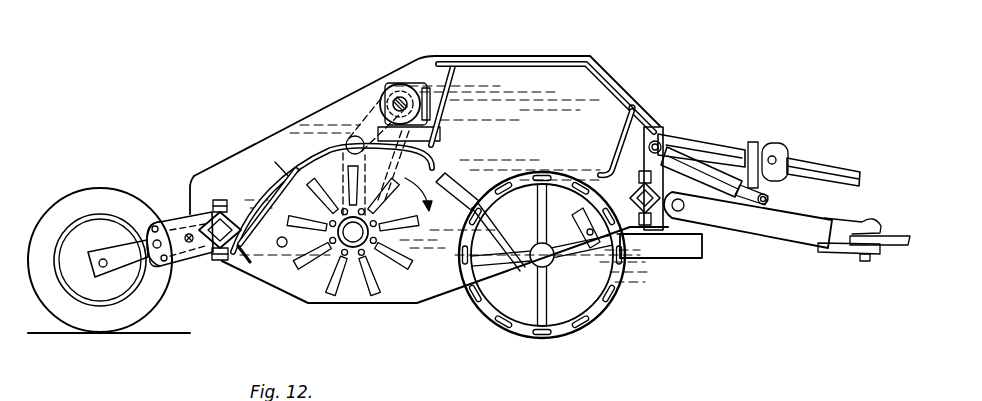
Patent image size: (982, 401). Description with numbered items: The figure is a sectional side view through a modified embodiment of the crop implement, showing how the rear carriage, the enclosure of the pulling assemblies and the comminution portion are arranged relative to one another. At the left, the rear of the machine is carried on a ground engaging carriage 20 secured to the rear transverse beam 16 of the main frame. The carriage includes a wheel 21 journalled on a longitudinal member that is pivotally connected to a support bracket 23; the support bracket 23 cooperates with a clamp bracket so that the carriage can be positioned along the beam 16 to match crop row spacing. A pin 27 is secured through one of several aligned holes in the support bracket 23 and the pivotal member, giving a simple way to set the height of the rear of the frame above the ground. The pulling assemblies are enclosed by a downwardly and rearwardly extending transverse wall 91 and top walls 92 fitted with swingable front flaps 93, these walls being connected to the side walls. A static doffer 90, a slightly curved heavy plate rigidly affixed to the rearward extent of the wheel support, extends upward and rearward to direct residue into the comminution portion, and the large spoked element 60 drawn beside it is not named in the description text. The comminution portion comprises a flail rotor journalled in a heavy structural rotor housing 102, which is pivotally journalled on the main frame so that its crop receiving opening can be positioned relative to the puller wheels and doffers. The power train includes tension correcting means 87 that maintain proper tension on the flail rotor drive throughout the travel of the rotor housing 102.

The rear transverse beam 16 is at (228, 213).
The ground engaging carriage 20 is at (184, 203).
The wheel 21 is at (84, 199).
The support bracket 23 is at (184, 263).
The pin 27 is at (163, 228).
The ground wheel 60 is at (618, 311).
The tension correcting means 87 is at (633, 86).
The static doffer 90 is at (463, 188).
The transverse wall 91 is at (456, 76).
The top wall 92 is at (550, 58).
The front flap 93 is at (626, 120).
The rotor housing 102 is at (280, 187).